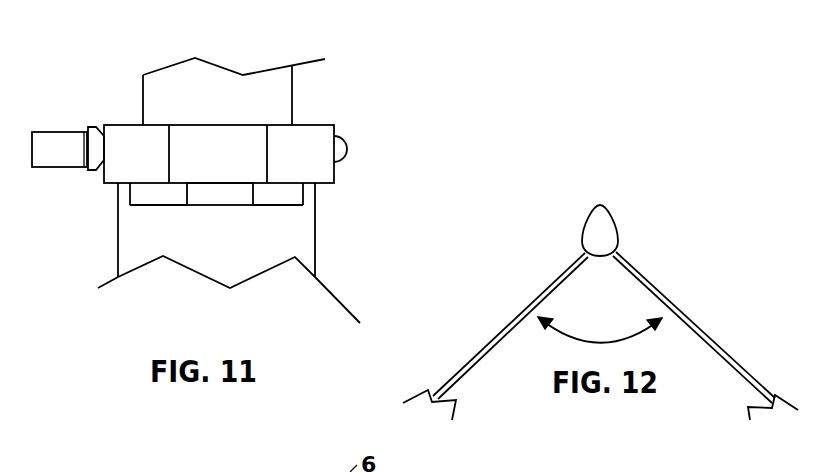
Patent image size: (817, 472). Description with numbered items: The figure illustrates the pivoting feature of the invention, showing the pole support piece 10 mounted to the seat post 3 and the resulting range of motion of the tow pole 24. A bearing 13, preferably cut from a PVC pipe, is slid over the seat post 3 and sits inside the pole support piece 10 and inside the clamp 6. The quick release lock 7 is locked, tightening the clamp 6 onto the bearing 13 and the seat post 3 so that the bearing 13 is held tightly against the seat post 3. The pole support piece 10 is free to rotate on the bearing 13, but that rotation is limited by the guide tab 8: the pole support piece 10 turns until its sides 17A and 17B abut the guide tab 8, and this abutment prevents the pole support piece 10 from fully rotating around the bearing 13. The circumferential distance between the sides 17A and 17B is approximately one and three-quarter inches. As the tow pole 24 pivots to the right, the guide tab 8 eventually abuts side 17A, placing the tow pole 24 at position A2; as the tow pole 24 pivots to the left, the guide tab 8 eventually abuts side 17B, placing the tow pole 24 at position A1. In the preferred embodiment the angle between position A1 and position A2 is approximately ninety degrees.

In FIG. 11, the seat post 3 is at (292, 85).
In FIG. 11, the clamp 6 is at (336, 130).
In FIG. 11, the quick release lock 7 is at (66, 130).
In FIG. 11, the guide tab 8 is at (225, 206).
In FIG. 11, the pole support piece 10 is at (316, 264).
In FIG. 11, the bearing 13 is at (158, 185).
In FIG. 11, the side 17A is at (132, 198).
In FIG. 11, the side 17B is at (303, 197).
In FIG. 12, the tow pole 24 is at (488, 333).
In FIG. 12, the position A1 is at (518, 292).
In FIG. 12, the position A2 is at (720, 317).